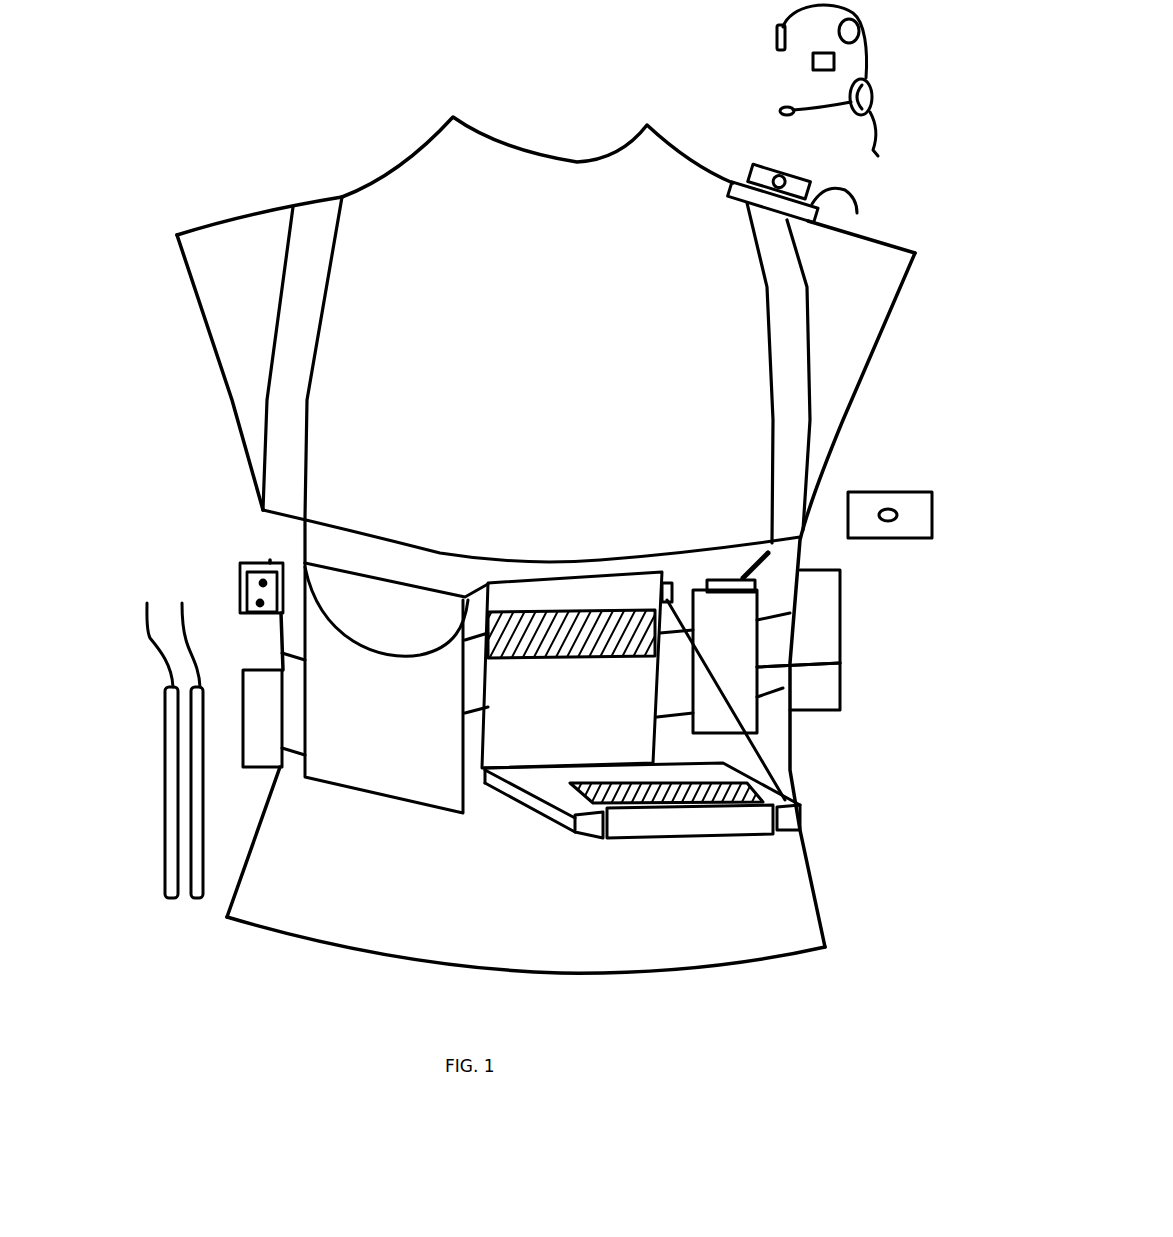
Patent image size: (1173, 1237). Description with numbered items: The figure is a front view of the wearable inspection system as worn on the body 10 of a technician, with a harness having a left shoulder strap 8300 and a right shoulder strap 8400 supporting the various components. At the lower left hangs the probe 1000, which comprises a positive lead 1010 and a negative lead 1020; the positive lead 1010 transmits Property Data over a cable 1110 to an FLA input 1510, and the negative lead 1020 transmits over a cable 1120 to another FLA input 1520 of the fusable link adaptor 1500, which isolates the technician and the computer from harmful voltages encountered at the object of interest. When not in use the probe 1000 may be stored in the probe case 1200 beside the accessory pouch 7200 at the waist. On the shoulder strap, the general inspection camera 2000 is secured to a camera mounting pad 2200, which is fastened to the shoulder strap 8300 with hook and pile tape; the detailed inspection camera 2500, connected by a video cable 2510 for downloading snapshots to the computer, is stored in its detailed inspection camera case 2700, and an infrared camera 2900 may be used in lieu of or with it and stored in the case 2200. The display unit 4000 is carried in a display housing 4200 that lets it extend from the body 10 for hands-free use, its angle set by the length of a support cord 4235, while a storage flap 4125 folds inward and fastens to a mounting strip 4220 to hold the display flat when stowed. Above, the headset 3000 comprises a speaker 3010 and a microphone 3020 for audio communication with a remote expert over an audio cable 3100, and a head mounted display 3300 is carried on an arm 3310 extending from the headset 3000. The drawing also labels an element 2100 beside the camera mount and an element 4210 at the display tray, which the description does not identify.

The body 10 is at (850, 330).
The probe 1000 is at (141, 826).
The positive lead 1010 is at (160, 890).
The negative lead 1020 is at (193, 903).
The cable 1110 is at (153, 640).
The cable 1120 is at (187, 637).
The probe case 1200 is at (260, 767).
The fusable link adaptor 1500 is at (250, 563).
The FLA input 1510 is at (233, 597).
The FLA input 1520 is at (247, 570).
The general inspection camera 2000 is at (753, 165).
The camera lens 2100 is at (847, 190).
The camera mounting pad 2200 is at (817, 622).
The detailed inspection camera 2500 is at (730, 573).
The video cable 2510 is at (732, 575).
The detailed inspection camera case 2700 is at (840, 663).
The infrared camera 2900 is at (862, 492).
The headset 3000 is at (785, 80).
The speaker 3010 is at (873, 80).
The microphone 3020 is at (780, 112).
The audio cable 3100 is at (877, 117).
The head mounted display 3300 is at (813, 63).
The arm 3310 is at (860, 18).
The display unit 4000 is at (704, 836).
The storage flap 4125 is at (673, 825).
The display housing 4200 is at (527, 590).
The tray support arm 4210 is at (597, 837).
The mounting strip 4220 is at (565, 645).
The support cord 4235 is at (748, 743).
The accessory pouch 7200 is at (360, 773).
The left shoulder strap 8300 is at (783, 397).
The right shoulder strap 8400 is at (295, 318).